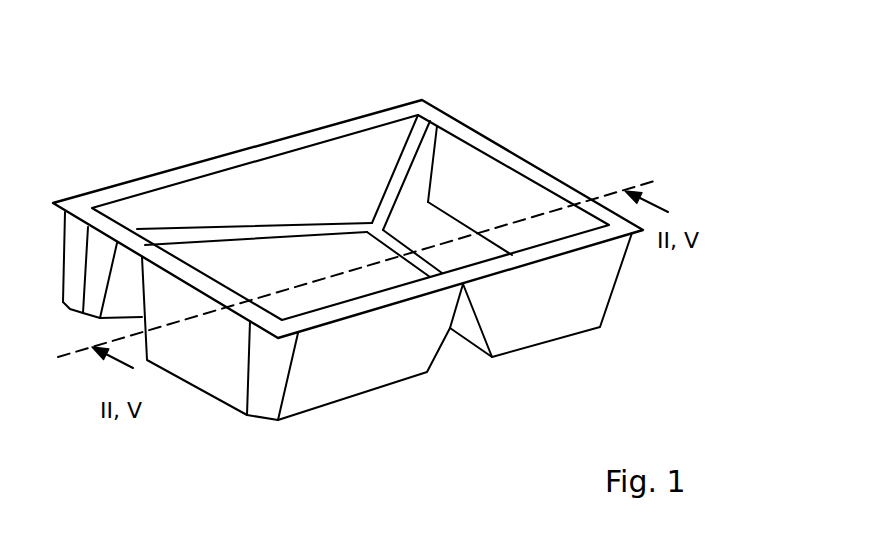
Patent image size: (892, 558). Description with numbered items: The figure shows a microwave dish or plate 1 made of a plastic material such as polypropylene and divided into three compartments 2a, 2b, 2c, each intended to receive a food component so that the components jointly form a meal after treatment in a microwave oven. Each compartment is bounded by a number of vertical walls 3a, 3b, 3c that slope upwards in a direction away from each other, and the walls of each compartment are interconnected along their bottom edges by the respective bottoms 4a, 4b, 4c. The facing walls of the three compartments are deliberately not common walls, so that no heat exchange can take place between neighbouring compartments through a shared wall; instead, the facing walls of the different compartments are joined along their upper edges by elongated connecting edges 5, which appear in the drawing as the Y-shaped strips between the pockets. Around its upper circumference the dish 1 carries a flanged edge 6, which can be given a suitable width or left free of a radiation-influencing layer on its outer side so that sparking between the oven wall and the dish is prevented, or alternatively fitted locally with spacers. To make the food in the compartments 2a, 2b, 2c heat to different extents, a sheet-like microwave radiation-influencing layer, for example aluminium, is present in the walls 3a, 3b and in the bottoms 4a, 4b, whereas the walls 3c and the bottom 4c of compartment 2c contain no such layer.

The dish 1 is at (600, 87).
The compartment 2a is at (481, 198).
The compartment 2b is at (316, 299).
The compartment 2c is at (260, 189).
The vertical walls 3a is at (474, 161).
The vertical walls 3b is at (222, 383).
The vertical walls 3c is at (312, 163).
The bottom 4a is at (457, 258).
The bottom 4b is at (302, 310).
The bottom 4c is at (357, 200).
The elongated connecting edges 5 is at (193, 233).
The flanged edge 6 is at (368, 119).